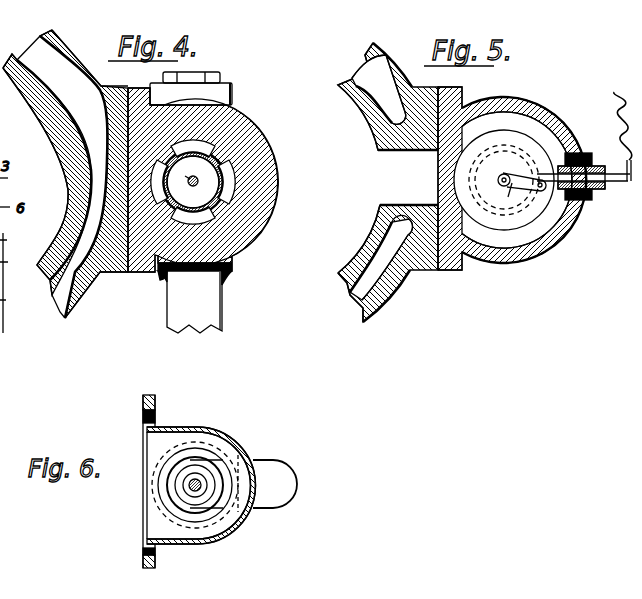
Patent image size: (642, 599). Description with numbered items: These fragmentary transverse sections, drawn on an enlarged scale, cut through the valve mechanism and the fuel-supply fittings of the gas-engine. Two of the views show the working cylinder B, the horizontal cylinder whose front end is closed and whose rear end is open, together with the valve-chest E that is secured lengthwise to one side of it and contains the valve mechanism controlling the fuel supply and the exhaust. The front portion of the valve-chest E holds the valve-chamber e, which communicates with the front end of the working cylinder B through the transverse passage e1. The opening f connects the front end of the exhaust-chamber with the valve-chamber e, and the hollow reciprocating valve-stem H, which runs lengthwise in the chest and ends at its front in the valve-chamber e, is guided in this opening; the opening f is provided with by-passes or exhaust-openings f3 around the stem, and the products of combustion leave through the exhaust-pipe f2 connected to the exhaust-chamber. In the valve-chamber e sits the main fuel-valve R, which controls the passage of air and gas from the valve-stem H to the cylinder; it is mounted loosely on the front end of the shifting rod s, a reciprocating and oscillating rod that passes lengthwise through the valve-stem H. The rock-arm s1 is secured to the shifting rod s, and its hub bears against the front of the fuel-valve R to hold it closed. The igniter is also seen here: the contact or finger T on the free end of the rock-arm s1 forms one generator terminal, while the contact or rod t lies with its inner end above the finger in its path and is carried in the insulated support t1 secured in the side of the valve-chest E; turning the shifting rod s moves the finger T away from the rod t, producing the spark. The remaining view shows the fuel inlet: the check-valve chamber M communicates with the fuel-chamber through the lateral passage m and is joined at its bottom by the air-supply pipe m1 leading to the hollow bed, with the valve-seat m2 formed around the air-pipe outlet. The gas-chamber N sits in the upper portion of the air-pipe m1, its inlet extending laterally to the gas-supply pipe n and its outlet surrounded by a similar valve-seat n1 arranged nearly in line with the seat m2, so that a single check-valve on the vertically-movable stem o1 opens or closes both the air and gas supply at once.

In FIG. 4, the working cylinder B is at (34, 118).
In FIG. 5, the working cylinder B is at (347, 126).
In FIG. 4, the valve-chest E is at (270, 112).
In FIG. 5, the valve-chest E is at (522, 95).
In FIG. 4, the opening f is at (217, 207).
In FIG. 4, the exhaust-pipe f2 is at (194, 301).
In FIG. 4, the by-passes or exhaust-openings f3 is at (287, 185).
In FIG. 4, the screw S is at (185, 175).
In FIG. 4, the hollow reciprocating valve-stem H is at (193, 182).
In FIG. 5, the valve-chamber e is at (504, 172).
In FIG. 5, the transverse passage e1 is at (409, 177).
In FIG. 5, the main fuel-valve R is at (501, 180).
In FIG. 5, the shifting rod s is at (498, 191).
In FIG. 5, the rock-arm s1 is at (505, 202).
In FIG. 5, the contact or rod t is at (524, 173).
In FIG. 5, the insulated support t1 is at (590, 199).
In FIG. 5, the contact or finger T is at (537, 190).
In FIG. 6, the check-valve chamber M is at (200, 427).
In FIG. 6, the lateral passage m is at (147, 435).
In FIG. 6, the air-supply pipe m1 is at (197, 511).
In FIG. 6, the valve-seat m2 is at (162, 507).
In FIG. 6, the gas-chamber N is at (205, 477).
In FIG. 6, the gas-supply pipe n is at (283, 484).
In FIG. 6, the valve-seat n1 is at (177, 488).
In FIG. 6, the vertically-movable stem o1 is at (200, 485).